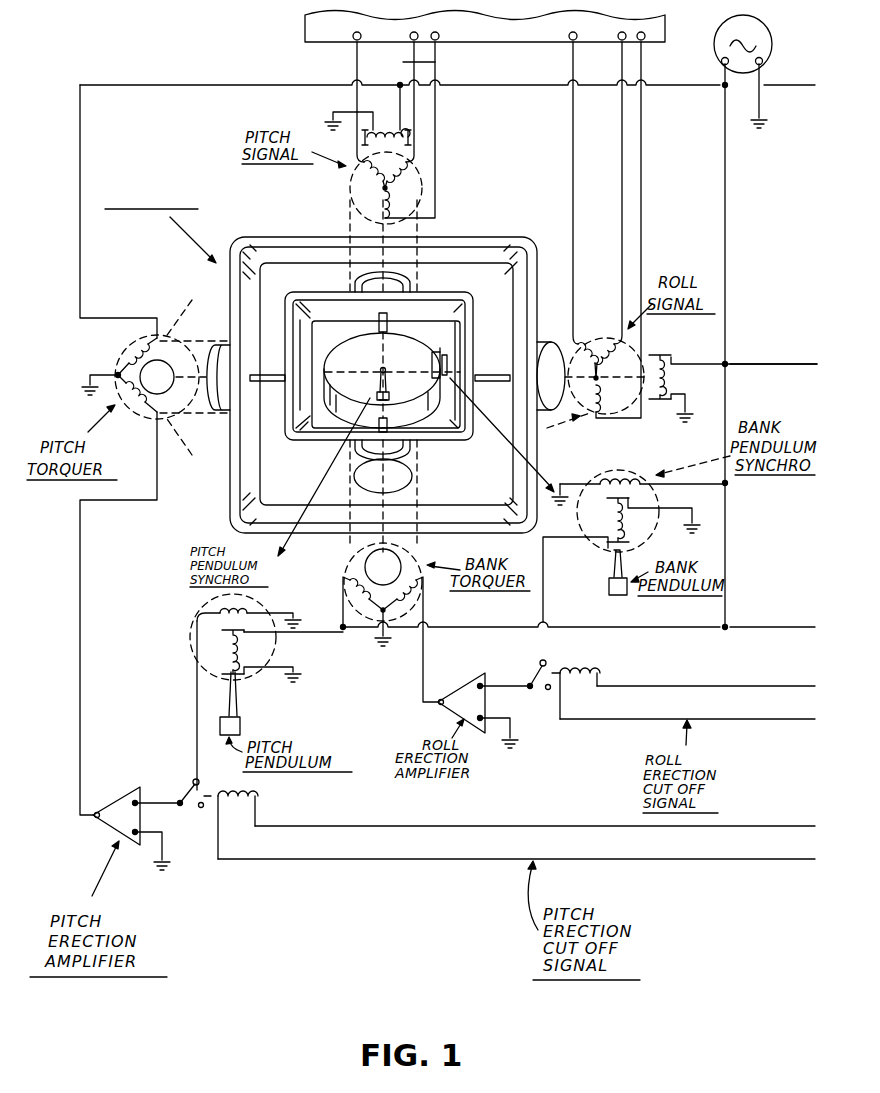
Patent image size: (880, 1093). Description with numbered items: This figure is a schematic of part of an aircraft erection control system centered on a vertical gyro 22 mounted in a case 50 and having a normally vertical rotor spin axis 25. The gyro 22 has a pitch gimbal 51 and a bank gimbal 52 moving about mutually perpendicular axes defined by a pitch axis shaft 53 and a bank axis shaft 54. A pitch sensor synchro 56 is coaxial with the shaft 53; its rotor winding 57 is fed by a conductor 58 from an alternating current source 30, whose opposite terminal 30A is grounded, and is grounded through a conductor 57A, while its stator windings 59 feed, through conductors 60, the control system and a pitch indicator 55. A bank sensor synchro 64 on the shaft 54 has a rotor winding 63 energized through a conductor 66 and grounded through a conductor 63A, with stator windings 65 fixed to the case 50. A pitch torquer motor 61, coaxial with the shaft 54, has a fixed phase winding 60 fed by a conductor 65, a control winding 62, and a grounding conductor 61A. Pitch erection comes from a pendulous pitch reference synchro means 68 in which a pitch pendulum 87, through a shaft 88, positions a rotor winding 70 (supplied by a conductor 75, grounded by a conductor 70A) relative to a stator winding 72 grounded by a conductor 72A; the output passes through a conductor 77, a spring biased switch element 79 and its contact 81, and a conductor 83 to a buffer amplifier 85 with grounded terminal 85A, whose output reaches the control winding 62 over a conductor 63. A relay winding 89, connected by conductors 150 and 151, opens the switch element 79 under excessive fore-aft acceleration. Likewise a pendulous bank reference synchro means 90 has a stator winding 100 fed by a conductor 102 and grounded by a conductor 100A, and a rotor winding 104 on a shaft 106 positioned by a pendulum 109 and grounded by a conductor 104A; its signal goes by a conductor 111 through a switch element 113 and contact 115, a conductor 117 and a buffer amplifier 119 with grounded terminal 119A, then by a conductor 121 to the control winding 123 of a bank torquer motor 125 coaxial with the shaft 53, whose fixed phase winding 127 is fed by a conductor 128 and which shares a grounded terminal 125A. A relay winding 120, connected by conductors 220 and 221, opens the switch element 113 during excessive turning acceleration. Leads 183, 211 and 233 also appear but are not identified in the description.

The vertical gyro 22 is at (391, 436).
The gyro rotor spin axis 25 is at (381, 367).
The source of alternating current 30 is at (772, 36).
The opposite terminal of source 30A is at (766, 67).
The case 50 is at (526, 259).
The pitch gimbal 51 is at (353, 341).
The bank gimbal 52 is at (473, 298).
The pitch axis shaft 53 is at (390, 316).
The bank axis shaft 54 is at (270, 375).
The pitch indicator 55 is at (303, 31).
The pitch sensor synchro 56 is at (410, 282).
The rotor winding 57 is at (412, 140).
The conductor 57A is at (334, 114).
The conductor 58 is at (399, 99).
The stator windings 59 is at (375, 208).
The fixed phase winding 60 is at (366, 62).
The pitch torquer motor 61 is at (215, 340).
The conductor 61A is at (90, 372).
The control winding 62 is at (146, 404).
The rotor winding 63 is at (78, 632).
The conductor 63A is at (688, 402).
The bank sensor synchro 64 is at (546, 346).
The stator windings 65 is at (184, 85).
The conductor 66 is at (695, 364).
The pitch reference synchro means 68 is at (376, 386).
The rotor winding 70 is at (240, 656).
The conductor 70A is at (298, 676).
The stator winding 72 is at (222, 610).
The conductor 72A is at (293, 612).
The conductor 75 is at (305, 636).
The conductor 77 is at (196, 698).
The switch element 79 is at (190, 792).
The contact 81 is at (183, 810).
The electrical conductor 83 is at (150, 800).
The buffer amplifier 85 is at (95, 818).
The common grounded input-output terminal 85A is at (150, 846).
The pitch pendulum 87 is at (390, 408).
The shaft 88 is at (390, 387).
The electromagnetic relay winding 89 is at (234, 800).
The bank reference synchro means 90 is at (444, 354).
The stator winding 100 is at (618, 480).
The conductor 100A is at (585, 471).
The conductor 102 is at (668, 484).
The rotor winding 104 is at (630, 522).
The conductor 104A is at (660, 502).
The shaft 106 is at (435, 353).
The pendulum 109 is at (452, 378).
The conductor 111 is at (545, 607).
The switch element 113 is at (540, 670).
The switch contact 115 is at (546, 693).
The conductor 117 is at (479, 682).
The buffer amplifier 119 is at (437, 706).
The common grounded input-output terminal 119A is at (515, 742).
The electromagnetic relay winding 120 is at (573, 680).
The electrical conductor 121 is at (425, 649).
The control winding 123 is at (405, 600).
The bank torquer motor 125 is at (413, 482).
The common grounded terminal 125A is at (396, 645).
The fixed phase winding 127 is at (352, 600).
The conductor 128 is at (342, 625).
The conductor 150 is at (310, 826).
The conductor 151 is at (340, 862).
The lead 183 is at (768, 364).
The lead 211 is at (766, 627).
The electrical conductor 220 is at (755, 684).
The electrical conductor 221 is at (748, 722).
The lead 233 is at (800, 87).